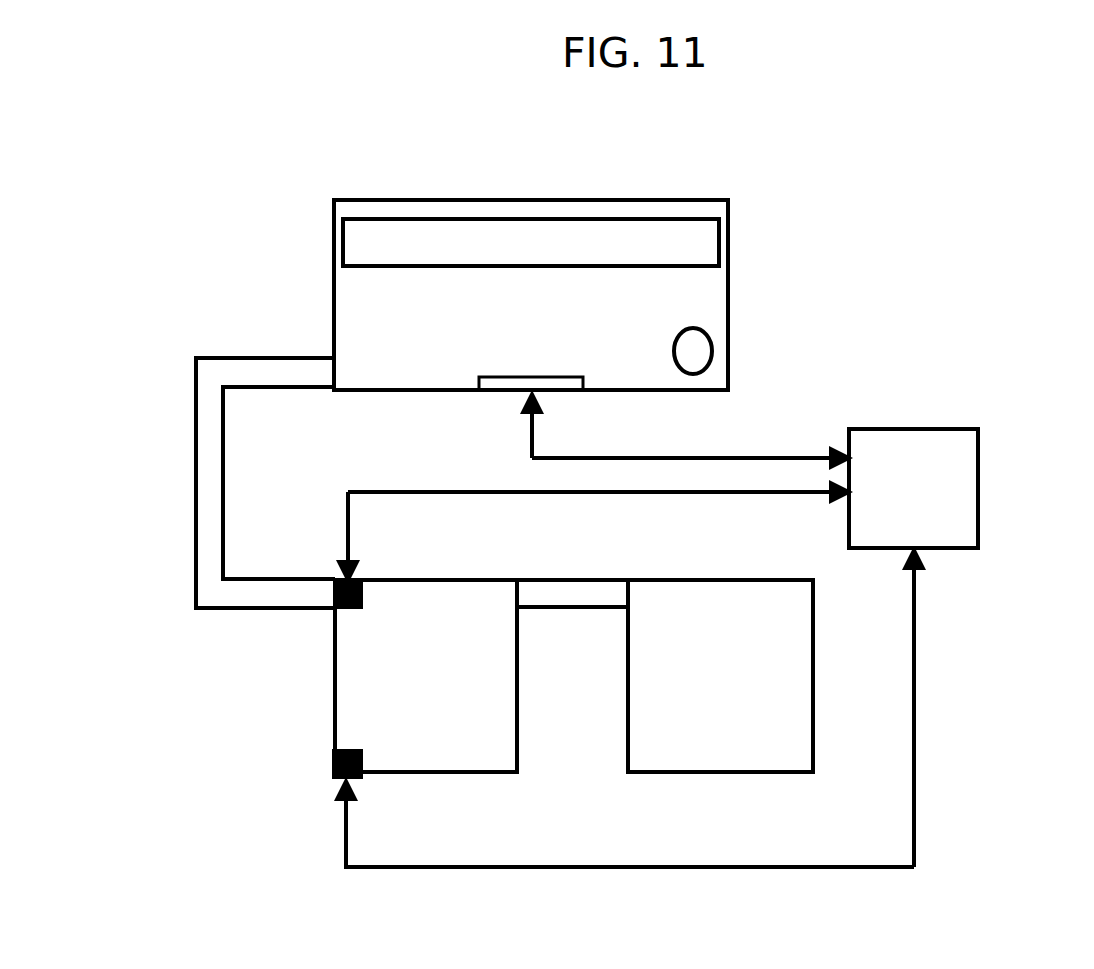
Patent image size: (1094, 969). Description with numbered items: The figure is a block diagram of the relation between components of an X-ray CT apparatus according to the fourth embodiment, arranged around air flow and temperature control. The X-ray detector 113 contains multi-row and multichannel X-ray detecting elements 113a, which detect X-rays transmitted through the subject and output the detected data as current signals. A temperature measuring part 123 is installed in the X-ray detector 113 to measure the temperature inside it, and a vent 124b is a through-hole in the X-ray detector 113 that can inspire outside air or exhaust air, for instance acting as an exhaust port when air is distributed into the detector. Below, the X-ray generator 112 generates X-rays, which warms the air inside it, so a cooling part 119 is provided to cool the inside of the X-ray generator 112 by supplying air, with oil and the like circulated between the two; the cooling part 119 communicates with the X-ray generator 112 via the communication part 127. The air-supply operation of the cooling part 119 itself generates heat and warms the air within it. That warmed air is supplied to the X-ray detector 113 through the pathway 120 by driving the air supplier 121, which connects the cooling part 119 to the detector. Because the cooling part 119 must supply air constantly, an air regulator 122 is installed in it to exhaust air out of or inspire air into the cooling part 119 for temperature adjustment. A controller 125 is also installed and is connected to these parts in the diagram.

The X-ray detector 113 is at (702, 207).
The X-ray detecting elements 113a is at (353, 246).
The vent 124b is at (701, 352).
The temperature measuring part 123 is at (506, 385).
The controller 125 is at (958, 489).
The cooling part 119 is at (452, 747).
The X-ray generator 112 is at (713, 748).
The communication part 127 is at (582, 593).
The pathway 120 is at (202, 490).
The air supplier 121 is at (352, 607).
The air regulator 122 is at (332, 775).